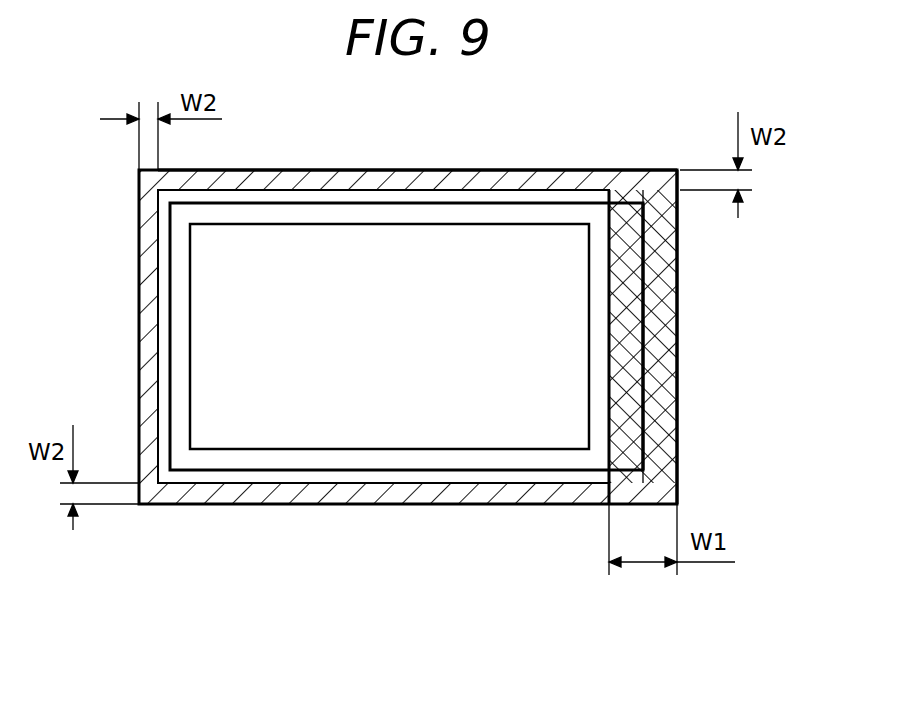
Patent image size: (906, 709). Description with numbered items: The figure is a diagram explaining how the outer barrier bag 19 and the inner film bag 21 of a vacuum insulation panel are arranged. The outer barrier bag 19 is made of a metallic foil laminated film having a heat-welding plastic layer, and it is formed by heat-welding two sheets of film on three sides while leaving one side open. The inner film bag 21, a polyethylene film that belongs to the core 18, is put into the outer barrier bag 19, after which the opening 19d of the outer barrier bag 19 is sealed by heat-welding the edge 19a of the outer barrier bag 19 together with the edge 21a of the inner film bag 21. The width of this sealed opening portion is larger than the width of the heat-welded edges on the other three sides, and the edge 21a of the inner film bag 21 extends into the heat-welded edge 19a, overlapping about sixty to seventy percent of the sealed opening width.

The core 18 is at (538, 347).
The outer barrier bag 19 is at (531, 170).
The edge of the outer barrier bag 19a is at (395, 170).
The opening of the outer barrier bag 19d is at (677, 423).
The inner film bag 21 is at (640, 567).
The edge of the inner film bag 21a is at (643, 278).